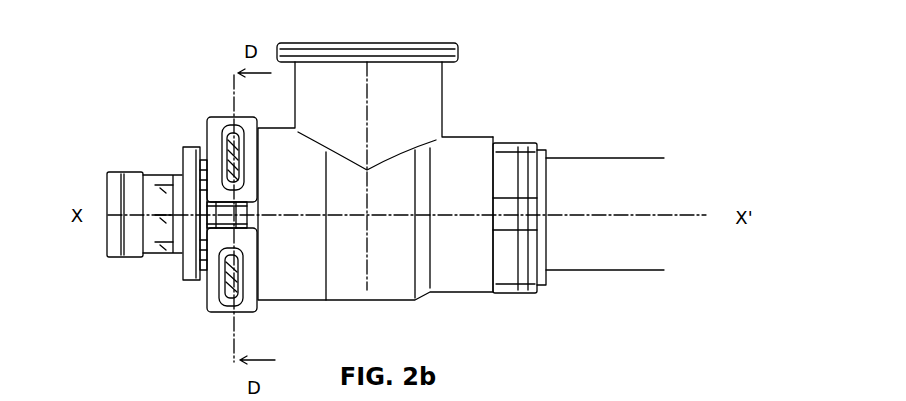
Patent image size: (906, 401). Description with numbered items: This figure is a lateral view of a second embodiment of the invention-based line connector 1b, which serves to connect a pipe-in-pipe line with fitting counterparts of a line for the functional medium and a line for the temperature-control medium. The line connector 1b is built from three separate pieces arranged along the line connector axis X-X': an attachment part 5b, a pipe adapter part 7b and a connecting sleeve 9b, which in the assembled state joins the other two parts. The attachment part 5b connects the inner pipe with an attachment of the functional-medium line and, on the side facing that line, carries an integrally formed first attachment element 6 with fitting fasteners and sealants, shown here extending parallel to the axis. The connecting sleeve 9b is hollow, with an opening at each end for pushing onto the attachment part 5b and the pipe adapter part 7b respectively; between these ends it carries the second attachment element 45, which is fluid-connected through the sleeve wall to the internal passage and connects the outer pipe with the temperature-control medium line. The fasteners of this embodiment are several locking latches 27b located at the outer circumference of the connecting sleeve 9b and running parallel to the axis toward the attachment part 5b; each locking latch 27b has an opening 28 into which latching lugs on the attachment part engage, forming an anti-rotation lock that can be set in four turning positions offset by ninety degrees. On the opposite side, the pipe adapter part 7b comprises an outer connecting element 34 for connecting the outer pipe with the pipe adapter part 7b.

The line connector 1b is at (135, 98).
The attachment part 5b is at (163, 200).
The first attachment element 6 is at (120, 271).
The pipe adapter part 7b is at (515, 173).
The connecting sleeve 9b is at (414, 87).
The locking latch 27b is at (197, 281).
The opening 28 is at (222, 143).
The outer connecting element 34 is at (543, 257).
The second attachment element 45 is at (325, 29).